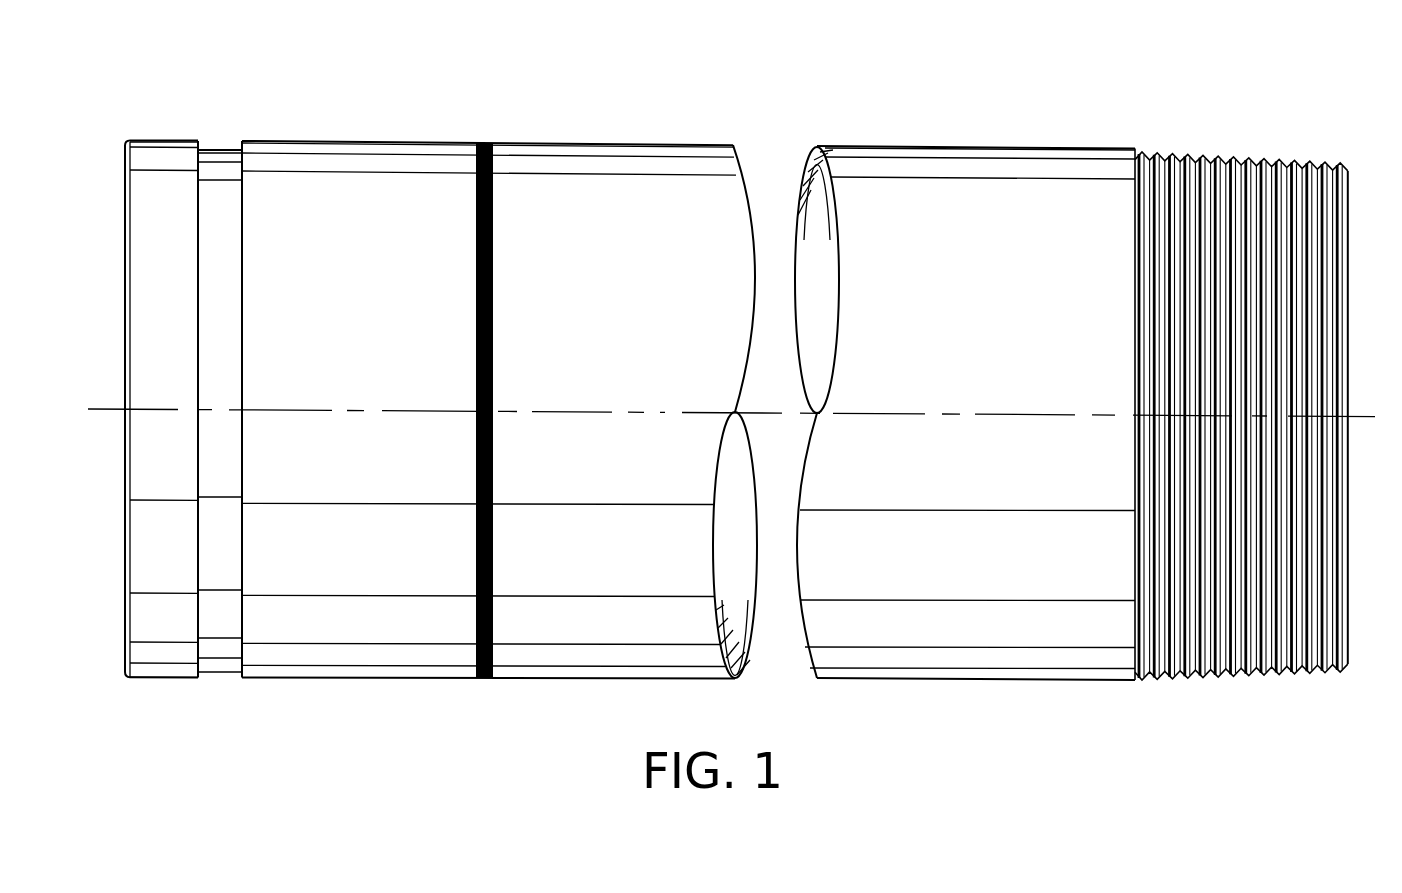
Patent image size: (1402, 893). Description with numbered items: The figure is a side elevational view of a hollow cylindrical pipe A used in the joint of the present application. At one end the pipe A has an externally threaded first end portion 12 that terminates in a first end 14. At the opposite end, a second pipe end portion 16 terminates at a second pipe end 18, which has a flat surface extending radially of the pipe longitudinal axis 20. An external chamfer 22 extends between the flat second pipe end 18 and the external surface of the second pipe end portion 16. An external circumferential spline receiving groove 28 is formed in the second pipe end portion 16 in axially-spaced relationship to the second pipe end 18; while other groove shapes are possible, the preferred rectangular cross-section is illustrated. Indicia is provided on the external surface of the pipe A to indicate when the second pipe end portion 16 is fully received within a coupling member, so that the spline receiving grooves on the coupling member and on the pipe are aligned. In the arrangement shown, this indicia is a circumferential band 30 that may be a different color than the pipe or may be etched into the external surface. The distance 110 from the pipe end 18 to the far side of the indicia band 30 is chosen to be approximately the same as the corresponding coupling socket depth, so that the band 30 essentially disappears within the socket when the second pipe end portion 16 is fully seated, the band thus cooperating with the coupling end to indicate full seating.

The externally threaded first end portion 12 is at (1228, 165).
The first end 14 is at (1349, 252).
The second pipe end portion 16 is at (318, 142).
The second pipe end 18 is at (123, 243).
The pipe longitudinal axis 20 is at (320, 410).
The external chamfer 22 is at (126, 143).
The external circumferential spline receiving groove 28 is at (212, 148).
The circumferential band 30 is at (494, 193).
The distance 110 is at (492, 140).
The pipe A is at (627, 140).